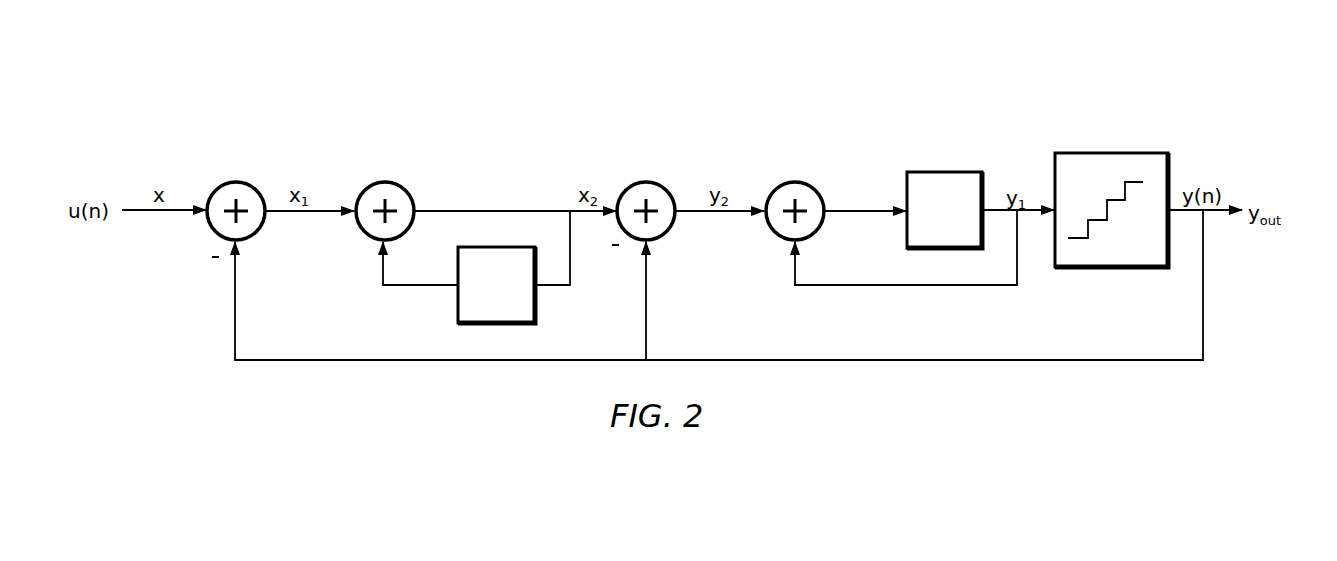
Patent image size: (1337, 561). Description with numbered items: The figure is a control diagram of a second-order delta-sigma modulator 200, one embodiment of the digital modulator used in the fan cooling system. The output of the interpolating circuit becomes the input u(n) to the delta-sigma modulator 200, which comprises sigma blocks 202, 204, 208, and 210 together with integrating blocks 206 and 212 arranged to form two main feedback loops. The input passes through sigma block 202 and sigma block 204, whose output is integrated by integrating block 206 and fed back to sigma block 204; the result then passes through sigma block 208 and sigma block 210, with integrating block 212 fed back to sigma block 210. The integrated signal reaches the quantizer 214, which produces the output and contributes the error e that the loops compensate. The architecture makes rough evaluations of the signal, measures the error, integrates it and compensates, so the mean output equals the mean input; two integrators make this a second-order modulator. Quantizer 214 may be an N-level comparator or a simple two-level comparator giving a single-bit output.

The second-order delta-sigma modulator 200 is at (1133, 56).
The sigma block 202 is at (227, 182).
The sigma block 204 is at (375, 183).
The integrating block 206 is at (457, 305).
The sigma block 208 is at (634, 183).
The sigma block 210 is at (783, 183).
The integrating block 212 is at (937, 170).
The quantizer 214 is at (1093, 152).